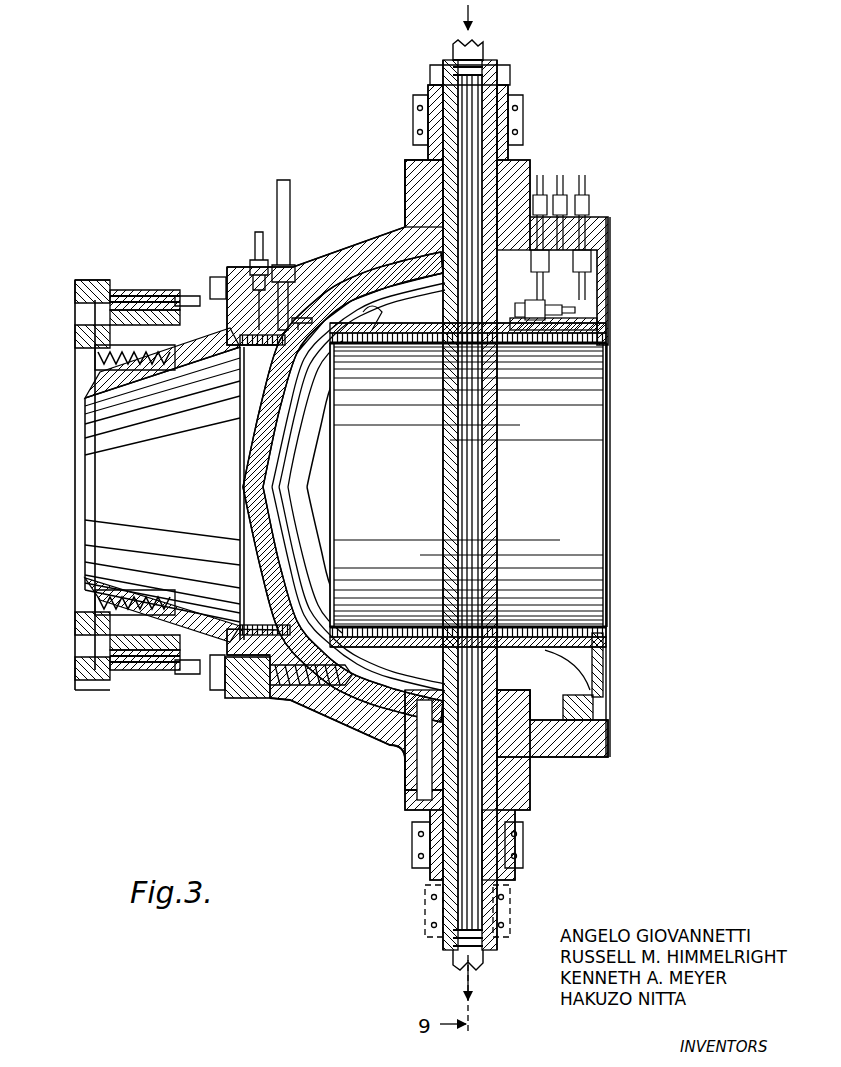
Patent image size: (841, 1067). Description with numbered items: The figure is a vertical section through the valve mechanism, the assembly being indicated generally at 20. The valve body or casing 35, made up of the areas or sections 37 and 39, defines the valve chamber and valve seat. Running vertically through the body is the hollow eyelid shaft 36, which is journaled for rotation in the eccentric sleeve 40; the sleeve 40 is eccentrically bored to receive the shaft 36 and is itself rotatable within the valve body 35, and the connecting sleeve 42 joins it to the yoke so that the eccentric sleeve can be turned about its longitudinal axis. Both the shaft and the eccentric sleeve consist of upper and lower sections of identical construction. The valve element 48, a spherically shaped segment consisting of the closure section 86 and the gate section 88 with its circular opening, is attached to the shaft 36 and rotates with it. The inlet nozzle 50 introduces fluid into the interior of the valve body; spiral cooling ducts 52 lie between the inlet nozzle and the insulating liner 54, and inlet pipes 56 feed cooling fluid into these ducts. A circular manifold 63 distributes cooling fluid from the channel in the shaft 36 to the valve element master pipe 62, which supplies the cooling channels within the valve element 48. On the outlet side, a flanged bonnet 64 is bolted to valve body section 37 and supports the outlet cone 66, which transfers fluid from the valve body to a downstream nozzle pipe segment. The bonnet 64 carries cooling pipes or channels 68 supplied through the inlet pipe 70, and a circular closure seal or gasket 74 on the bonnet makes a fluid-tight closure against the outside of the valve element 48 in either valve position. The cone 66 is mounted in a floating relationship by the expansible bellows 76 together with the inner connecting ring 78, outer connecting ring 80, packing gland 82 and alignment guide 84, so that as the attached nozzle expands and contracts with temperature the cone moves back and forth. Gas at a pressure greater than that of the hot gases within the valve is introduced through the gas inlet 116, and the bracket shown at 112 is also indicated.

The apparatus assembly 20 is at (656, 366).
The valve body 35 is at (573, 762).
The hollow eyelid shaft 36 is at (486, 124).
The valve body section 37 is at (392, 227).
The valve body area 39 is at (606, 218).
The eccentric sleeve 40 is at (503, 155).
The connecting sleeve 42 is at (523, 100).
The valve element 48 is at (268, 552).
The inlet nozzle 50 is at (582, 652).
The spiral cooling ducts 52 is at (596, 633).
The insulating liner 54 is at (565, 626).
The inlet pipes 56 is at (560, 330).
The valve element master pipe 62 is at (272, 508).
The circular manifold 63 is at (488, 335).
The flanged bonnet 64 is at (240, 692).
The outlet cone 66 is at (86, 405).
The cooling pipes or channels 68 is at (262, 665).
The inlet pipe 70 is at (257, 232).
The circular closure seal 74 is at (300, 318).
The expansible bellows 76 is at (152, 590).
The inner connecting ring 78 is at (78, 594).
The outer connecting ring 80 is at (90, 680).
The packing gland 82 is at (150, 290).
The alignment guide 84 is at (185, 295).
The closure section 86 is at (252, 442).
The gate section 88 is at (312, 452).
The sensor bracket 112 is at (508, 905).
The gas inlet 116 is at (278, 182).